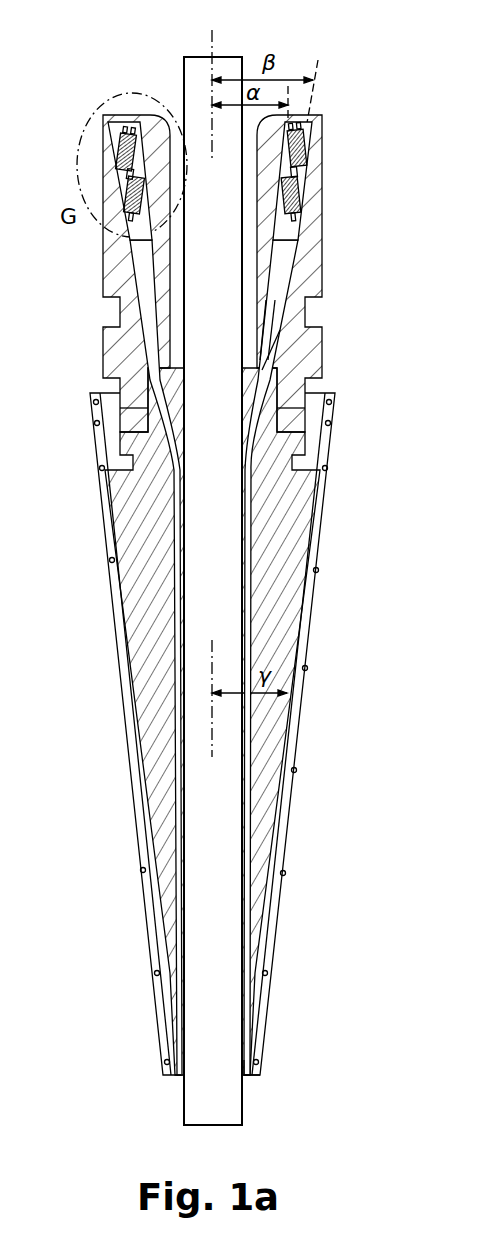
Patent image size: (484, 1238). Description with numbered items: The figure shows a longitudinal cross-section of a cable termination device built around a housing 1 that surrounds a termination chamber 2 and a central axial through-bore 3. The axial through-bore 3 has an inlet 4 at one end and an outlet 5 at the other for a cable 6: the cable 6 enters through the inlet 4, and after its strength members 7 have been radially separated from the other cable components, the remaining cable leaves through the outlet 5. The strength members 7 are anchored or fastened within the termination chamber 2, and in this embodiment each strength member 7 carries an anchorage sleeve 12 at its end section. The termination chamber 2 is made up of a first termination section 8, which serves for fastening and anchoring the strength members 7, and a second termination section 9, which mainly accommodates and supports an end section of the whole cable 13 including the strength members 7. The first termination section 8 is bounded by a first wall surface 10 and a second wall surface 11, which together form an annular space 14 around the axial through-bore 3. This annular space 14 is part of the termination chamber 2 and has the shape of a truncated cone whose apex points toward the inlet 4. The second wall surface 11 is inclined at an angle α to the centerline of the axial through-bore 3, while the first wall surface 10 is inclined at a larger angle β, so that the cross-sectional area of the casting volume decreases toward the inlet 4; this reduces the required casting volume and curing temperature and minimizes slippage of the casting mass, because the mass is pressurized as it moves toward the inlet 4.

The housing 1 is at (300, 737).
The termination chamber 2 is at (142, 343).
The axial through-bore 3 is at (213, 785).
The inlet 4 is at (246, 1078).
The outlet 5 is at (177, 110).
The cable 6 is at (210, 1015).
The strength members 7 is at (306, 176).
The first termination section 8 is at (293, 268).
The second termination section 9 is at (280, 505).
The first wall surface 10 is at (297, 245).
The second wall surface 11 is at (265, 312).
The anchorage sleeve 12 is at (308, 156).
The whole cable 13 is at (149, 591).
The annular space 14 is at (275, 338).